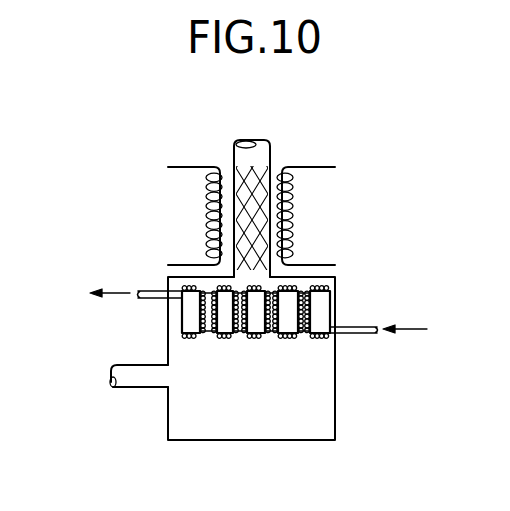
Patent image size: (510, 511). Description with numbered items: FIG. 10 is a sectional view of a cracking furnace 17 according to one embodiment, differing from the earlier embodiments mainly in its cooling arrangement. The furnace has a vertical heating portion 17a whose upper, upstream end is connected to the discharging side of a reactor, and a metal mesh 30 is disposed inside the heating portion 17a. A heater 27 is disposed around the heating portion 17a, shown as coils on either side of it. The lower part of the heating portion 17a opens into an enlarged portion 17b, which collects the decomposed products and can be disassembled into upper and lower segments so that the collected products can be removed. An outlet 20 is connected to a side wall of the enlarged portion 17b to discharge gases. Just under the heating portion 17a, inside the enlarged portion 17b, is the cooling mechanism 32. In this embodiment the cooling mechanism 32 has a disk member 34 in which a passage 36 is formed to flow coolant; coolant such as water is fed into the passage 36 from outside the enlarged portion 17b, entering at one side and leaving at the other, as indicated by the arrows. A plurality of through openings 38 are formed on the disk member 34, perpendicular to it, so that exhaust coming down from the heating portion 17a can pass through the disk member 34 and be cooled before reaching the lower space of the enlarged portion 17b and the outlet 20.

The cracking furnace 17 is at (217, 148).
The heating portion 17a is at (271, 211).
The enlarged portion 17b is at (243, 430).
The outlet 20 is at (140, 388).
The heater 27 is at (210, 218).
The metal mesh 30 is at (258, 237).
The cooling mechanism 32 is at (257, 352).
The disk member 34 is at (255, 318).
The passage 36 is at (323, 308).
The through openings 38 is at (304, 333).